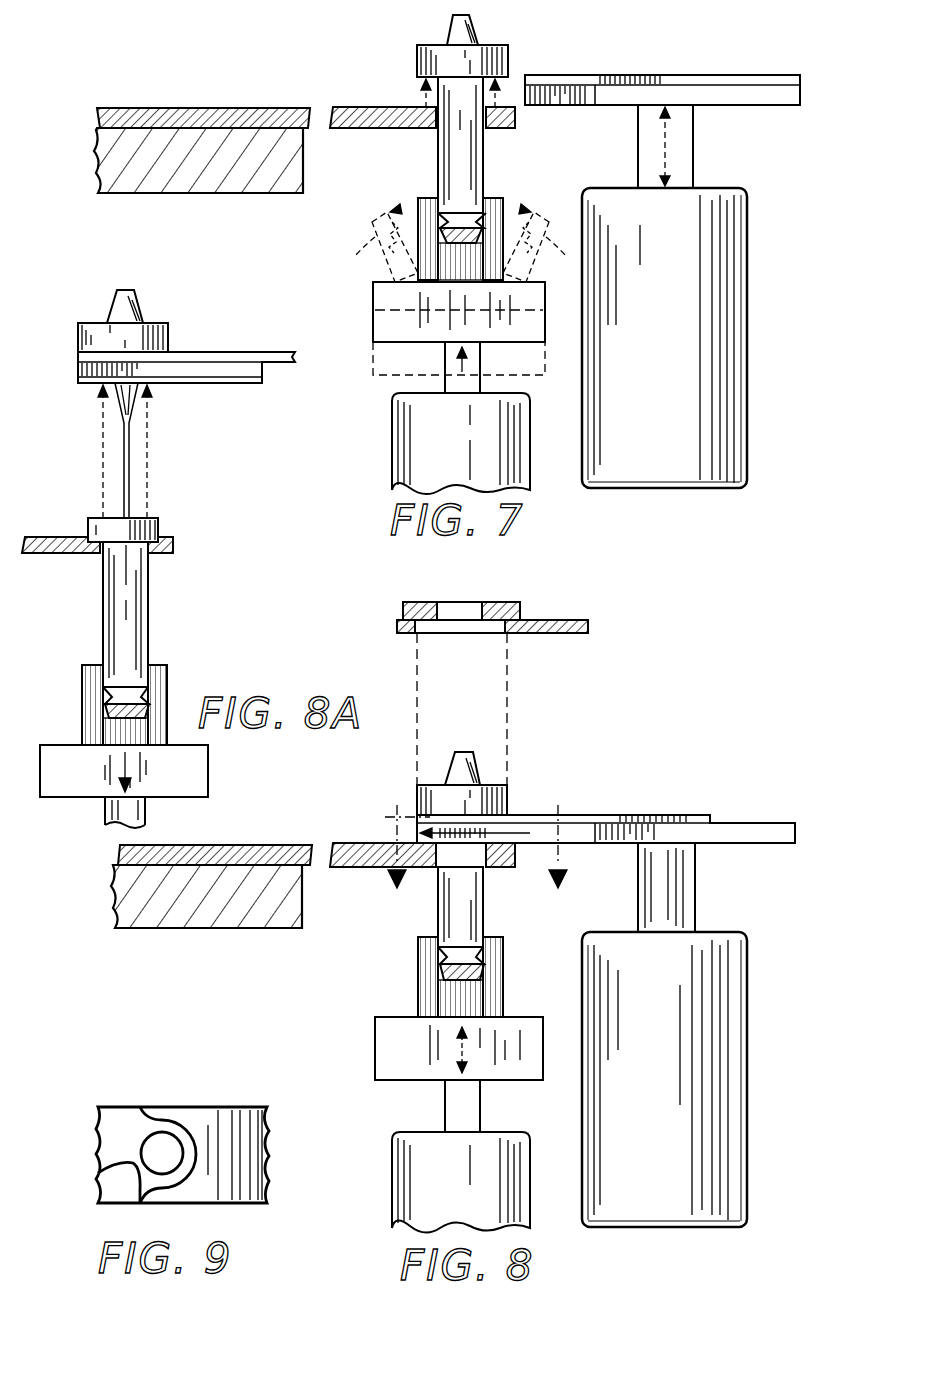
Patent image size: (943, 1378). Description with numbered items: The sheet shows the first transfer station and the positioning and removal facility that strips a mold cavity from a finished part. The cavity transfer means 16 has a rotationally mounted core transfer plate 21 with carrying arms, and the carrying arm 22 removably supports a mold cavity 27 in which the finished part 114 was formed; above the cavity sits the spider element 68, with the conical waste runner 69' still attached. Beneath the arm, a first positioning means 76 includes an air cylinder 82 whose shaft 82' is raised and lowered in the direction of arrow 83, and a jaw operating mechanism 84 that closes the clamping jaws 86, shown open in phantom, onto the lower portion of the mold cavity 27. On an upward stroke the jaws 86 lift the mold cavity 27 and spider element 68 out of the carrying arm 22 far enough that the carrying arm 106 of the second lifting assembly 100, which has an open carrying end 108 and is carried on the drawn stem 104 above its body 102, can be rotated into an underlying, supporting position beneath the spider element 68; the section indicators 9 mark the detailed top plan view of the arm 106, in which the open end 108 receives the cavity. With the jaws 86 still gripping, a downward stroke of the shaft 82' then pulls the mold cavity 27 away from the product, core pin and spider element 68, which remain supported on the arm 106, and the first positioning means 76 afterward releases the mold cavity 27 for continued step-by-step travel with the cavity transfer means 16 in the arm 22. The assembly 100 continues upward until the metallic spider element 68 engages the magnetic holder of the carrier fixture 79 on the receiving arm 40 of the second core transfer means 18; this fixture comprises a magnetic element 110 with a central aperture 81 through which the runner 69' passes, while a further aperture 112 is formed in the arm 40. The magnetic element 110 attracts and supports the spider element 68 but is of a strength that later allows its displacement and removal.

In FIG. 8A, the cavity transfer means 16 is at (272, 72).
In FIG. 8A, the core transfer plate 21 is at (230, 192).
In FIG. 7, the carrying arm 22 is at (378, 106).
In FIG. 8A, the carrying arm 22 is at (70, 537).
In FIG. 8, the carrying arm 22 is at (350, 843).
In FIG. 7, the mold cavity 27 is at (485, 150).
In FIG. 8A, the mold cavity 27 is at (153, 585).
In FIG. 8, the mold cavity 27 is at (486, 920).
In FIG. 7, the waste plastic runner element 69' is at (489, 30).
In FIG. 8A, the waste plastic runner element 69' is at (155, 303).
In FIG. 8, the waste plastic runner element 69' is at (483, 755).
In FIG. 7, the spider element 68 is at (508, 60).
In FIG. 8A, the spider element 68 is at (168, 339).
In FIG. 8, the spider element 68 is at (507, 800).
In FIG. 7, the clamping jaws 86 is at (418, 204).
In FIG. 8A, the clamping jaws 86 is at (82, 690).
In FIG. 8, the clamping jaws 86 is at (418, 980).
In FIG. 7, the jaw operating mechanism 84 is at (373, 345).
In FIG. 8A, the jaw operating mechanism 84 is at (59, 746).
In FIG. 8, the jaw operating mechanism 84 is at (372, 1061).
In FIG. 7, the directional arrow 83 is at (470, 372).
In FIG. 8, the directional arrow 83 is at (460, 1050).
In FIG. 7, the first positioning means 76 is at (370, 378).
In FIG. 8, the first positioning means 76 is at (385, 1108).
In FIG. 7, the shaft 82' is at (509, 374).
In FIG. 8, the shaft 82' is at (496, 1106).
In FIG. 7, the air cylinder 82 is at (437, 443).
In FIG. 8, the air cylinder 82 is at (480, 1182).
In FIG. 7, the carrying arm 106 is at (800, 86).
In FIG. 8A, the carrying arm 106 is at (228, 352).
In FIG. 8, the carrying arm 106 is at (546, 815).
In FIG. 9, the carrying arm 106 is at (166, 1107).
In FIG. 7, the open carrying end 108 is at (548, 104).
In FIG. 9, the open carrying end 108 is at (98, 1173).
In FIG. 7, the actuator stem 104 is at (695, 141).
In FIG. 8, the actuator stem 104 is at (694, 886).
In FIG. 7, the second lifting assembly 100 is at (765, 238).
In FIG. 8, the second lifting assembly 100 is at (770, 929).
In FIG. 7, the actuator cylinder 102 is at (749, 272).
In FIG. 8, the actuator cylinder 102 is at (748, 1040).
In FIG. 8A, the finished part 114 is at (137, 418).
In FIG. 8, the carrier fixture 79 is at (390, 611).
In FIG. 8, the magnetic element 110 is at (428, 602).
In FIG. 8, the central aperture 81 is at (447, 603).
In FIG. 8, the core transfer means 18 is at (542, 608).
In FIG. 8, the carrying arm 40 is at (578, 620).
In FIG. 8, the aperture 112 is at (434, 634).
In FIG. 8, the section line 9- 9 is at (477, 868).